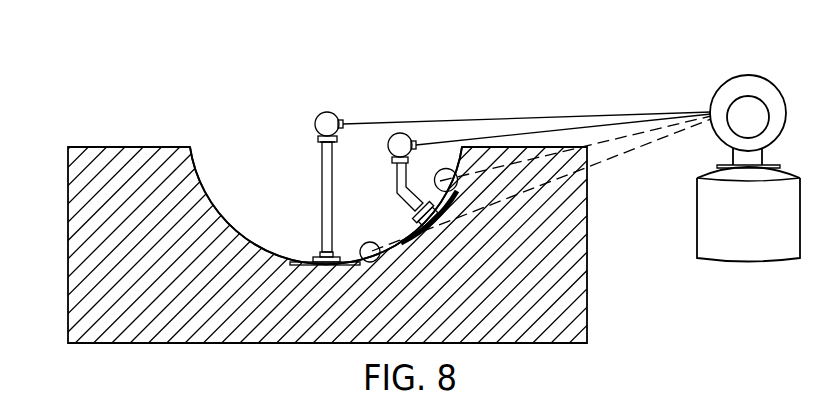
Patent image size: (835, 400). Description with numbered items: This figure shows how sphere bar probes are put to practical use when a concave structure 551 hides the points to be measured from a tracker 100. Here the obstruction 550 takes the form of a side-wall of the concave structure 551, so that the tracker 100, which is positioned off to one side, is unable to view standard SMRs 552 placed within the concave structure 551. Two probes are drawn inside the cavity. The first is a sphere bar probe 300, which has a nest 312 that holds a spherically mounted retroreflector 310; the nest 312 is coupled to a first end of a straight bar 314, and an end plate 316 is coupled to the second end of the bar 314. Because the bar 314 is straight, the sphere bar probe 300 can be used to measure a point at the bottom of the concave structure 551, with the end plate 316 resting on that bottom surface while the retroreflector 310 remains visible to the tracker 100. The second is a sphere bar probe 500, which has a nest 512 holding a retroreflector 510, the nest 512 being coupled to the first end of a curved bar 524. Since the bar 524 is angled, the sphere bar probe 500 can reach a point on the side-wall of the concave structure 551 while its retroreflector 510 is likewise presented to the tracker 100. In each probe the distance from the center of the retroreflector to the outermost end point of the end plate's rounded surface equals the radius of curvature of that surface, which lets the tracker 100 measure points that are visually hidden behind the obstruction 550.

The tracker 100 is at (747, 265).
The sphere bar probe 300 is at (307, 144).
The spherically mounted retroreflector 310 is at (329, 112).
The nest 312 is at (317, 138).
The straight bar 314 is at (322, 178).
The end plate 316 is at (300, 262).
The sphere bar probe 500 is at (396, 134).
The retroreflector 510 is at (399, 133).
The nest 512 is at (392, 160).
The curved bar 524 is at (402, 193).
The obstruction 550 is at (76, 320).
The concave structure 551 is at (56, 151).
The standard SMRs 552 is at (447, 170).